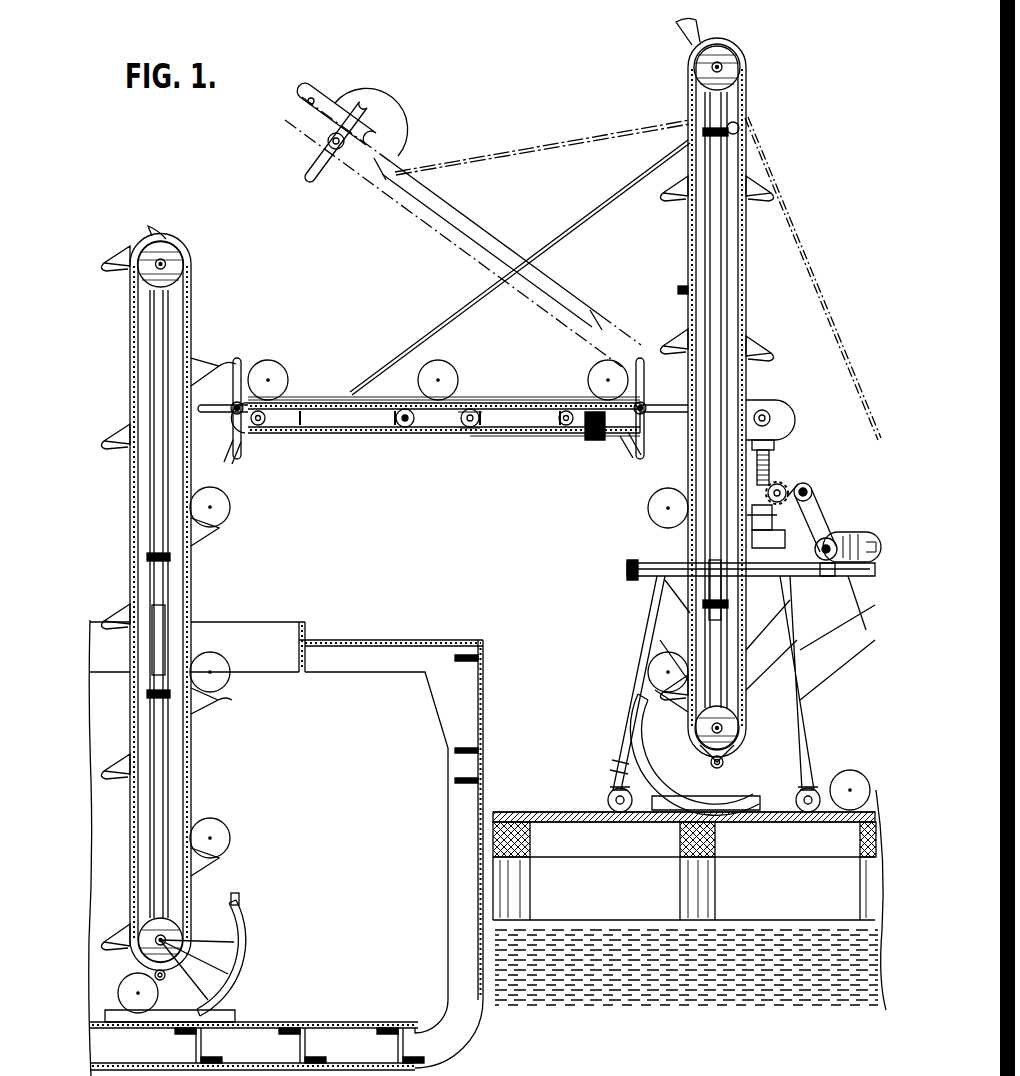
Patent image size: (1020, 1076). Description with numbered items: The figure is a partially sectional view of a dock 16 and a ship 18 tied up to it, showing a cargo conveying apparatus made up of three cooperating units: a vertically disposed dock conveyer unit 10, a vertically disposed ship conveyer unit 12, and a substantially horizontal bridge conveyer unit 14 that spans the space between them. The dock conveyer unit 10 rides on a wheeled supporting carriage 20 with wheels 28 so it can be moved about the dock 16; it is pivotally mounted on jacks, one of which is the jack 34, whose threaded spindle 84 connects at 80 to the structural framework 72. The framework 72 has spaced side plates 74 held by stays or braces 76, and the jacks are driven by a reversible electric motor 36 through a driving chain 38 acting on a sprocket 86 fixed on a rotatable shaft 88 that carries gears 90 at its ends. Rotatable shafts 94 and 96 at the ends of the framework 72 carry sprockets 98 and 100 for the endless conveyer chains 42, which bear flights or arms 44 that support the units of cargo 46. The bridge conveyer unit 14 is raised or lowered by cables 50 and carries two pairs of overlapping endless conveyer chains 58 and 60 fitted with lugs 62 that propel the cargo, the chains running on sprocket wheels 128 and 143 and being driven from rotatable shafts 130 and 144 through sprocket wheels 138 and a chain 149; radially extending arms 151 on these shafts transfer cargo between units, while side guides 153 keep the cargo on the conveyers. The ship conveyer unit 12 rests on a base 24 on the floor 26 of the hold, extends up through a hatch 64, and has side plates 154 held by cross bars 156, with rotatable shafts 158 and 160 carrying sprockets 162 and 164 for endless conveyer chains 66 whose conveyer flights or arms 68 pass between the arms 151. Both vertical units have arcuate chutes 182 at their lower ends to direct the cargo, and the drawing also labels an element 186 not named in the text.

The dock conveyer unit 10 is at (717, 686).
The ship conveyer unit 12 is at (479, 611).
The bridge conveyer unit 14 is at (372, 190).
The dock 16 is at (545, 812).
The ship 18 is at (308, 832).
The wheeled supporting carriage 20 is at (652, 648).
The base 24 is at (225, 1013).
The floor 26 is at (334, 1024).
The wheels 28 is at (608, 800).
The jack 34 is at (782, 520).
The reversible electric motor 36 is at (850, 578).
The driving chain 38 is at (822, 520).
The endless conveyer chains 42 is at (678, 290).
The flights or arms 44 is at (676, 197).
The units of cargo 46 is at (226, 519).
The cables 50 is at (400, 354).
The endless conveyer chains 58 is at (566, 437).
The endless conveyer chains 60 is at (443, 419).
The lugs 62 is at (472, 409).
The hatch 64 is at (282, 630).
The endless conveyer chains 66 is at (138, 564).
The conveyer flights or arms 68 is at (123, 449).
The structural framework 72 is at (767, 393).
The side plates 74 is at (748, 288).
The stays or braces 76 is at (742, 236).
The pivotal connection 80 is at (771, 418).
The threaded spindle 84 is at (771, 468).
The sprocket 86 is at (840, 532).
The rotatable shaft 88 is at (812, 489).
The gears 90 is at (790, 487).
The rotatable shaft 94 is at (733, 65).
The rotatable shaft 96 is at (737, 722).
The sprockets 98 is at (742, 69).
The sprockets 100 is at (740, 739).
The sprocket wheels 128 is at (405, 428).
The rotatable shaft 130 is at (645, 404).
The sprocket wheels 138 is at (610, 436).
The sprocket wheels 143 is at (471, 430).
The rotatable shaft 144 is at (234, 426).
The chain 149 is at (258, 432).
The radially extending arms 151 is at (238, 452).
The side guides 153 is at (330, 400).
The side plates 154 is at (132, 553).
The cross bars 156 is at (162, 686).
The rotatable shaft 158 is at (178, 272).
The rotatable shaft 160 is at (168, 943).
The sprockets 162 is at (163, 243).
The sprockets 164 is at (142, 950).
The arcuate chutes 182 is at (241, 940).
The motor 186 is at (853, 533).